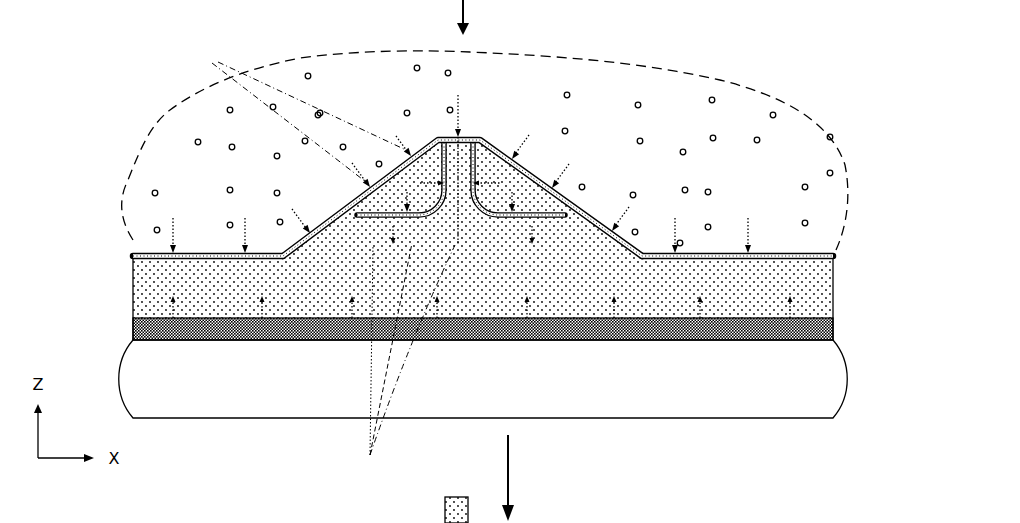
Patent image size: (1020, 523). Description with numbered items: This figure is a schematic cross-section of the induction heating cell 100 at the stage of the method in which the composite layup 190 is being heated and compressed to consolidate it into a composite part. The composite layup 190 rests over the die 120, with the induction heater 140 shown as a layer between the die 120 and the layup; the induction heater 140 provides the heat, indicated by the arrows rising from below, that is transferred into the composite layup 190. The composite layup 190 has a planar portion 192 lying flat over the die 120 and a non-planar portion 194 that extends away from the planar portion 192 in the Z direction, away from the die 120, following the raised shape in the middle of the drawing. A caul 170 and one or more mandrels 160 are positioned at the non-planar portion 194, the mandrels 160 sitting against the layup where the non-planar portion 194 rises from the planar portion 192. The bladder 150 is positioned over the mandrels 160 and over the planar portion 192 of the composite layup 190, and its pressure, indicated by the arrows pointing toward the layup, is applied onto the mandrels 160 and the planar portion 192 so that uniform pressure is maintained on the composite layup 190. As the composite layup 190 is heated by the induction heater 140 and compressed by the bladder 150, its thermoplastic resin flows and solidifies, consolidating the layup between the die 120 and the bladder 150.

The induction heating cell 100 is at (131, 129).
The die 120 is at (843, 323).
The induction heater 140 is at (838, 320).
The bladder 150 is at (752, 250).
The mandrel 160 is at (522, 197).
The caul 170 is at (486, 156).
The composite layup 190 is at (842, 272).
The planar portion 192 is at (195, 255).
The non-planar portion 194 is at (423, 147).